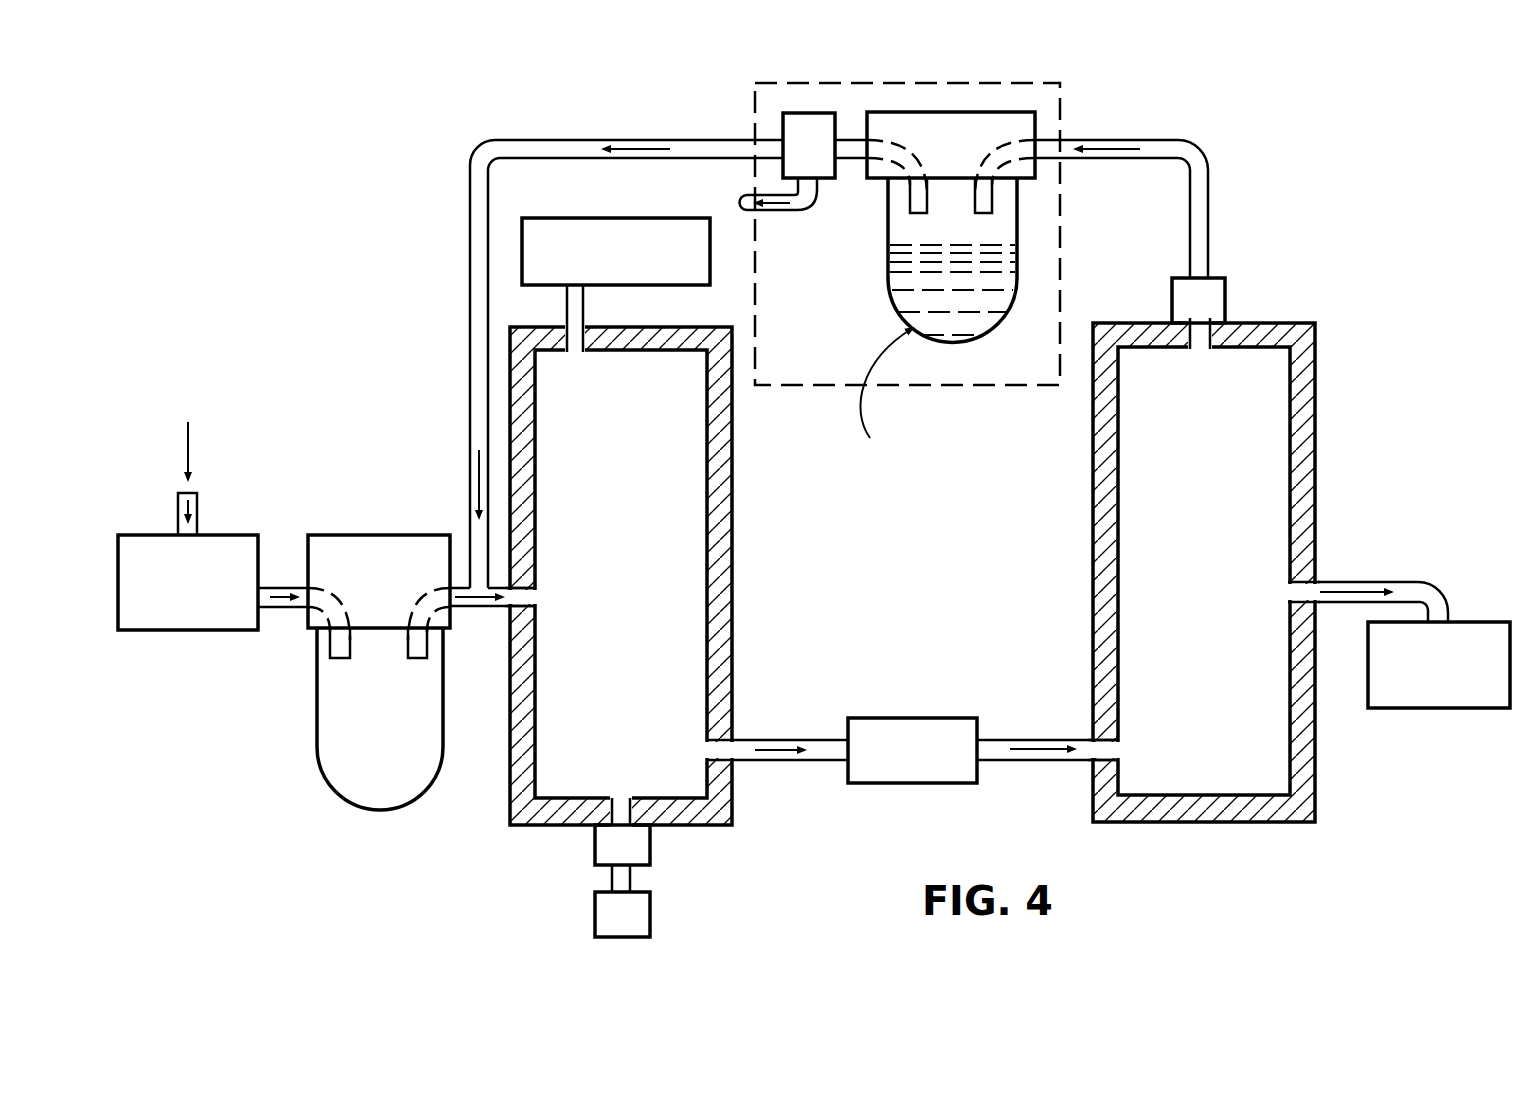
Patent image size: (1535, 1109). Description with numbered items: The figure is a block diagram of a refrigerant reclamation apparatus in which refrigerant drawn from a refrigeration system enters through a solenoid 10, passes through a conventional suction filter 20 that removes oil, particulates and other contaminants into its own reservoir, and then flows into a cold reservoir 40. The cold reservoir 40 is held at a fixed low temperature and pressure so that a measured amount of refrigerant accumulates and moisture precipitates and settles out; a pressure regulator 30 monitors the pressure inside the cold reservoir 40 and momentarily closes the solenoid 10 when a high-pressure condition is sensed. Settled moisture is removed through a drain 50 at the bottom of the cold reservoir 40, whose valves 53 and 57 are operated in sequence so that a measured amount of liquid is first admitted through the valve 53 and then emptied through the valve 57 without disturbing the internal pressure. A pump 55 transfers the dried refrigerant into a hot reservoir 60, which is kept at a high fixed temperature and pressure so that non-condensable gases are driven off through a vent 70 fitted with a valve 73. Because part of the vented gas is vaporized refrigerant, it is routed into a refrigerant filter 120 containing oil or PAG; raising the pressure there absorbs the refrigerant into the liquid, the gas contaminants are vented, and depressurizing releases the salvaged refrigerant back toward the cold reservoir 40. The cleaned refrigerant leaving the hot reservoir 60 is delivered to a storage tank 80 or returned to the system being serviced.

The solenoid 10 is at (225, 632).
The suction filter 20 is at (387, 518).
The pressure regulator 30 is at (522, 258).
The cold reservoir 40 is at (707, 828).
The drain 50 is at (616, 884).
The valve 53 is at (650, 868).
The pump 55 is at (962, 718).
The valve 57 is at (655, 920).
The hot reservoir 60 is at (1225, 825).
The vent 70 is at (1172, 231).
The valve 73 is at (1225, 280).
The storage tank 80 is at (1415, 710).
The refrigerant filter 120 is at (1062, 112).